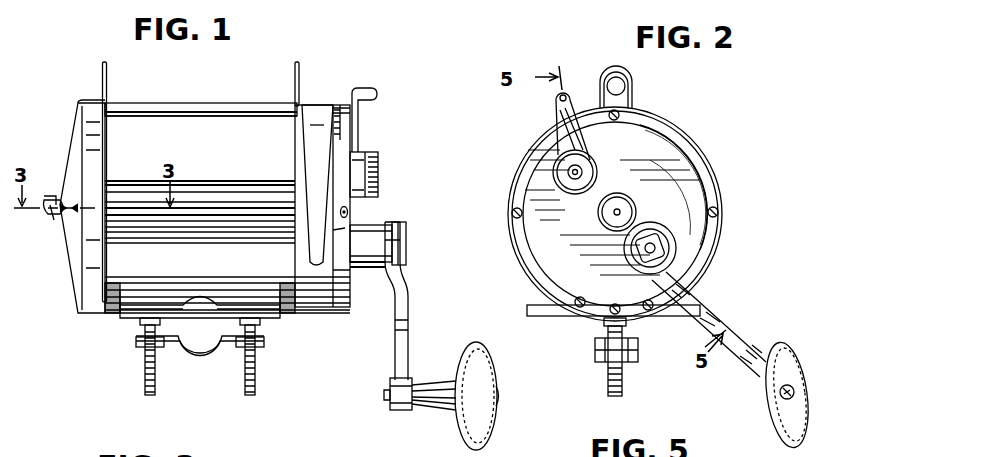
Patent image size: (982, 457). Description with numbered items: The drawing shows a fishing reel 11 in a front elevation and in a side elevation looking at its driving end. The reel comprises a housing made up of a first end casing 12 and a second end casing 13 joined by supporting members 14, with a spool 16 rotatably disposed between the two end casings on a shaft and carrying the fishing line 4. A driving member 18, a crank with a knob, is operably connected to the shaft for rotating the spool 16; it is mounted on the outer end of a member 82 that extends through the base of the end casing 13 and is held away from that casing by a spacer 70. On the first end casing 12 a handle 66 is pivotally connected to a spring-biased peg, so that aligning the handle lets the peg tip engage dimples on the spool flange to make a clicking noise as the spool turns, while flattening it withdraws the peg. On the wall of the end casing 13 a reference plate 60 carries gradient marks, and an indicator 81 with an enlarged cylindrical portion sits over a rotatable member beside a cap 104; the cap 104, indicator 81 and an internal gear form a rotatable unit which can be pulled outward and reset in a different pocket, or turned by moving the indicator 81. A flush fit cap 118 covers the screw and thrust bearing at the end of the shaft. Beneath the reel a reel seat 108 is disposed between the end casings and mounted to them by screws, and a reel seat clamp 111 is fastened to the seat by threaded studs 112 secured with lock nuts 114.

In FIG. 1, the fishing line 4 is at (255, 177).
In FIG. 1, the fishing reel 11 is at (180, 103).
In FIG. 1, the first end casing 12 is at (74, 128).
In FIG. 2, the second end casing 13 is at (705, 134).
In FIG. 1, the supporting members 14 is at (121, 114).
In FIG. 1, the spool 16 is at (131, 176).
In FIG. 1, the driving member 18 is at (408, 318).
In FIG. 2, the driving member 18 is at (712, 304).
In FIG. 1, the reference plate 60 is at (308, 100).
In FIG. 1, the handle 66 is at (50, 216).
In FIG. 1, the spacer 70 is at (360, 272).
In FIG. 1, the indicator 81 is at (358, 112).
In FIG. 2, the indicator 81 is at (556, 126).
In FIG. 1, the member 82 is at (406, 240).
In FIG. 2, the member 82 is at (664, 250).
In FIG. 1, the cap 104 is at (378, 158).
In FIG. 2, the cap 104 is at (553, 173).
In FIG. 1, the reel seat 108 is at (250, 305).
In FIG. 1, the reel seat clamp 111 is at (192, 362).
In FIG. 2, the reel seat clamp 111 is at (596, 355).
In FIG. 1, the threaded studs 112 is at (144, 371).
In FIG. 2, the threaded studs 112 is at (622, 391).
In FIG. 1, the lock nuts 114 is at (136, 340).
In FIG. 2, the lock nuts 114 is at (604, 322).
In FIG. 1, the flush fit cap 118 is at (350, 213).
In FIG. 2, the flush fit cap 118 is at (625, 209).